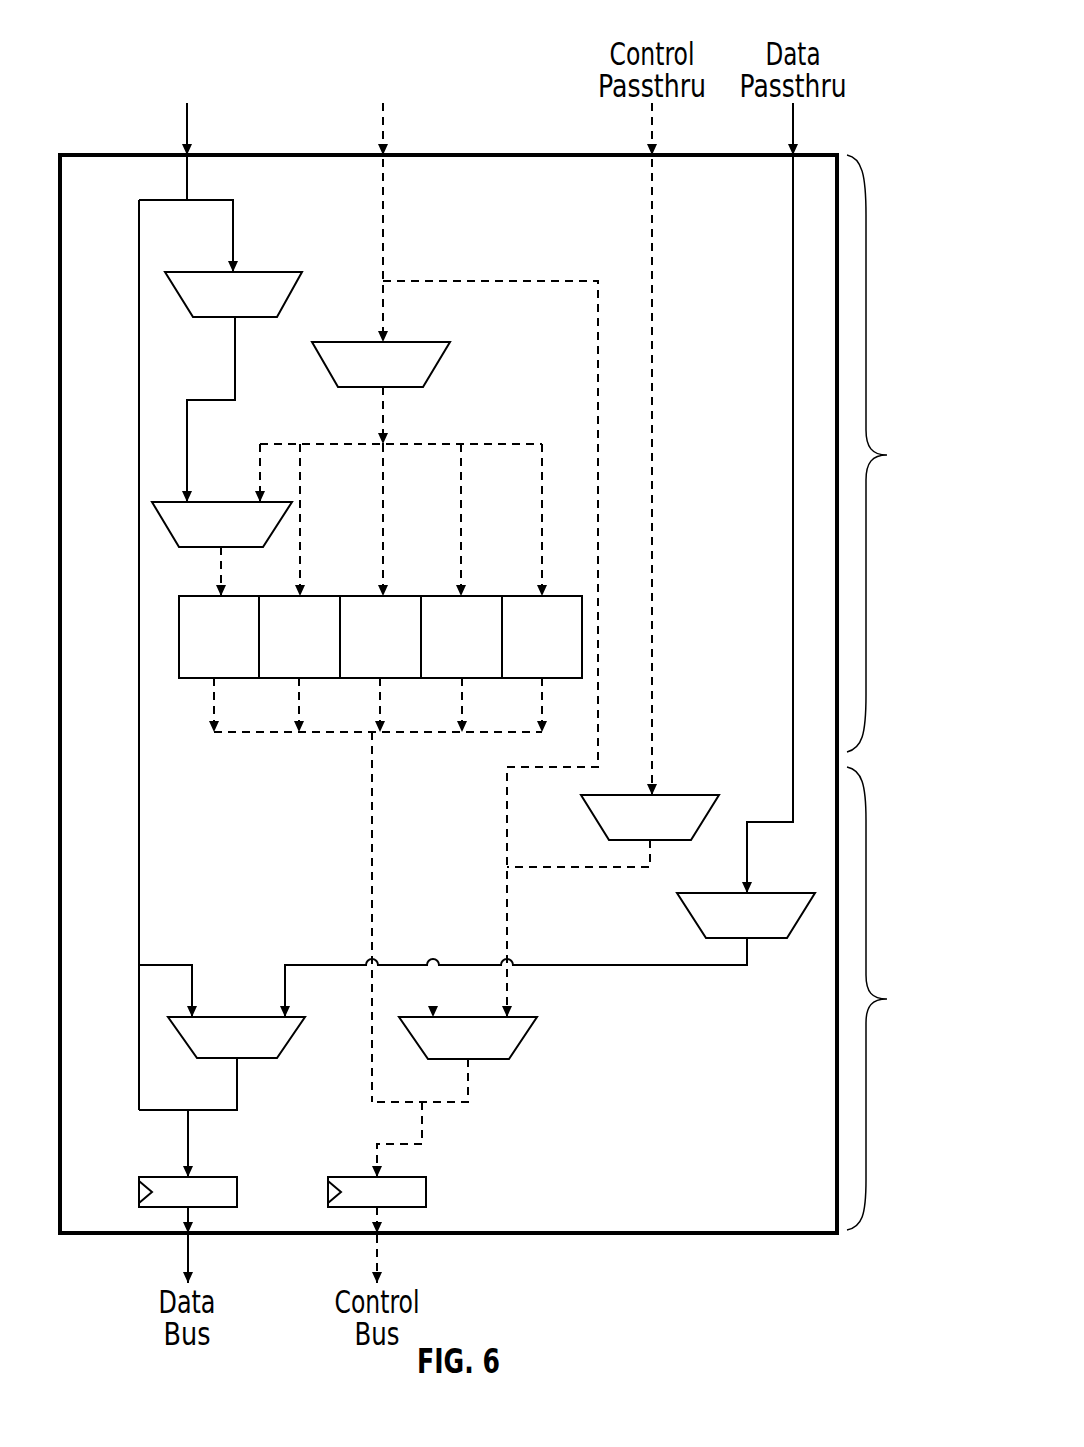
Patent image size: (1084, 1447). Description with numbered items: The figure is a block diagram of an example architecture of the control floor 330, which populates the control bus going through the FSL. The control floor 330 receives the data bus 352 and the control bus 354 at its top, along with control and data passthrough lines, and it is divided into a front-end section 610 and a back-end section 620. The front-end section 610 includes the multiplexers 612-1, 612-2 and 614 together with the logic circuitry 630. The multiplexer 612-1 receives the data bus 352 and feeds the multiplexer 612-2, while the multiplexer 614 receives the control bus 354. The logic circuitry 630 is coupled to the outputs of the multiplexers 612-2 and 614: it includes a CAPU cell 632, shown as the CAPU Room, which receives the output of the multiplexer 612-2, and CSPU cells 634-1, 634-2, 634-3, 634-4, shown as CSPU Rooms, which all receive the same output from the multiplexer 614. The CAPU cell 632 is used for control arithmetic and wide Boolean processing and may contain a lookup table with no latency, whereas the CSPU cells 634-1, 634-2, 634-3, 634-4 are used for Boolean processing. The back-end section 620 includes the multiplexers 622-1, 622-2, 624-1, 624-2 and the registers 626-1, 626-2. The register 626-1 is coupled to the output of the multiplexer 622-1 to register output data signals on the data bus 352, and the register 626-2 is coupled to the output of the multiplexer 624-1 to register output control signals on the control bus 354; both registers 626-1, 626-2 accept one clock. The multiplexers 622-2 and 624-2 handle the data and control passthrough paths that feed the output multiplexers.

The control floor 330 is at (844, 33).
The data bus 352 is at (188, 125).
The control bus 354 is at (384, 125).
The front-end section 610 is at (895, 453).
The multiplexer 612-1 is at (270, 272).
The multiplexer 612-2 is at (208, 502).
The multiplexer 614 is at (417, 342).
The back-end section 620 is at (895, 998).
The multiplexer 622-1 is at (257, 1058).
The multiplexer 622-2 is at (770, 940).
The multiplexer 624-1 is at (485, 1059).
The multiplexer 624-2 is at (670, 795).
The register 626-1 is at (225, 1177).
The register 626-2 is at (415, 1177).
The logic circuitry 630 is at (440, 815).
The CAPU cell 632 is at (193, 680).
The CSPU cell 634-1 is at (331, 596).
The CSPU cell 634-2 is at (411, 596).
The CSPU cell 634-3 is at (491, 596).
The CSPU cell 634-4 is at (562, 596).